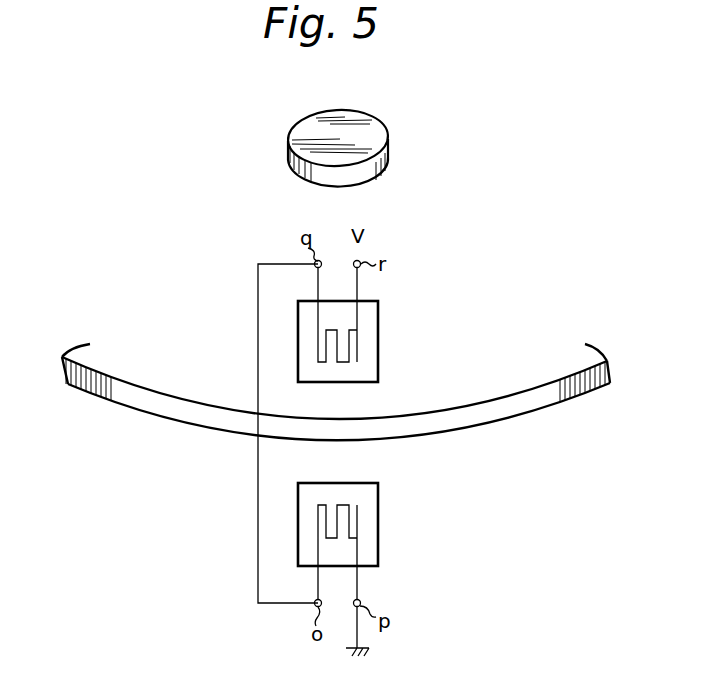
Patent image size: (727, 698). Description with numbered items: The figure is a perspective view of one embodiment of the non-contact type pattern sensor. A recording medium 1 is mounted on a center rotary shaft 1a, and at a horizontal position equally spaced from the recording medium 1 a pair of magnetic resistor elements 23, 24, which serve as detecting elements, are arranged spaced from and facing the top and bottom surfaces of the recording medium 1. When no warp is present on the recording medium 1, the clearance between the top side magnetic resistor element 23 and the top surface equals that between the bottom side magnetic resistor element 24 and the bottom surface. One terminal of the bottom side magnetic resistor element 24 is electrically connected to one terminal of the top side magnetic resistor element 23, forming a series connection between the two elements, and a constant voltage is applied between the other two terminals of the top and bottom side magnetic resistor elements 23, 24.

The recording medium 1 is at (503, 420).
The center rotary shaft 1a is at (389, 146).
The top side magnetic resistor element 23 is at (337, 363).
The bottom side magnetic resistor element 24 is at (338, 503).